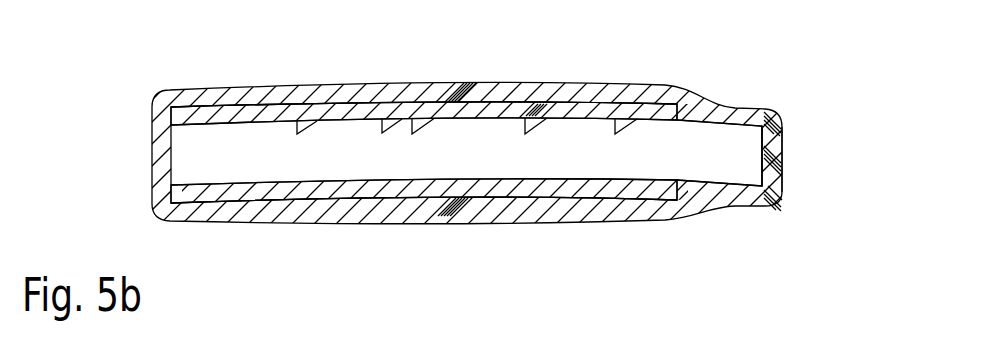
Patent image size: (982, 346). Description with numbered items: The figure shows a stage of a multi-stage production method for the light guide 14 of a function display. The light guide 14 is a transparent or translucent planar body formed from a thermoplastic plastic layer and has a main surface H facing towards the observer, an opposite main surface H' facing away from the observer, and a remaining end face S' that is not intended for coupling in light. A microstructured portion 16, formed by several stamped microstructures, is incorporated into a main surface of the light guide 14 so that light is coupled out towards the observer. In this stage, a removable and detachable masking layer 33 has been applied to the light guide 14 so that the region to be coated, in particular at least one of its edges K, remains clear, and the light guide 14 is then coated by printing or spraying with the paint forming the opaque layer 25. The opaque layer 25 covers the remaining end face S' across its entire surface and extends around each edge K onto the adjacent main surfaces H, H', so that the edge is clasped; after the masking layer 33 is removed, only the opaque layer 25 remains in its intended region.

The light guide 14 is at (248, 157).
The microstructured portion 16 is at (536, 103).
The opaque layer 25 is at (641, 86).
The masking layer 33 is at (580, 85).
The main surface H is at (460, 62).
The main surface H' is at (453, 236).
The edge K is at (818, 216).
The remaining end face S' is at (810, 159).